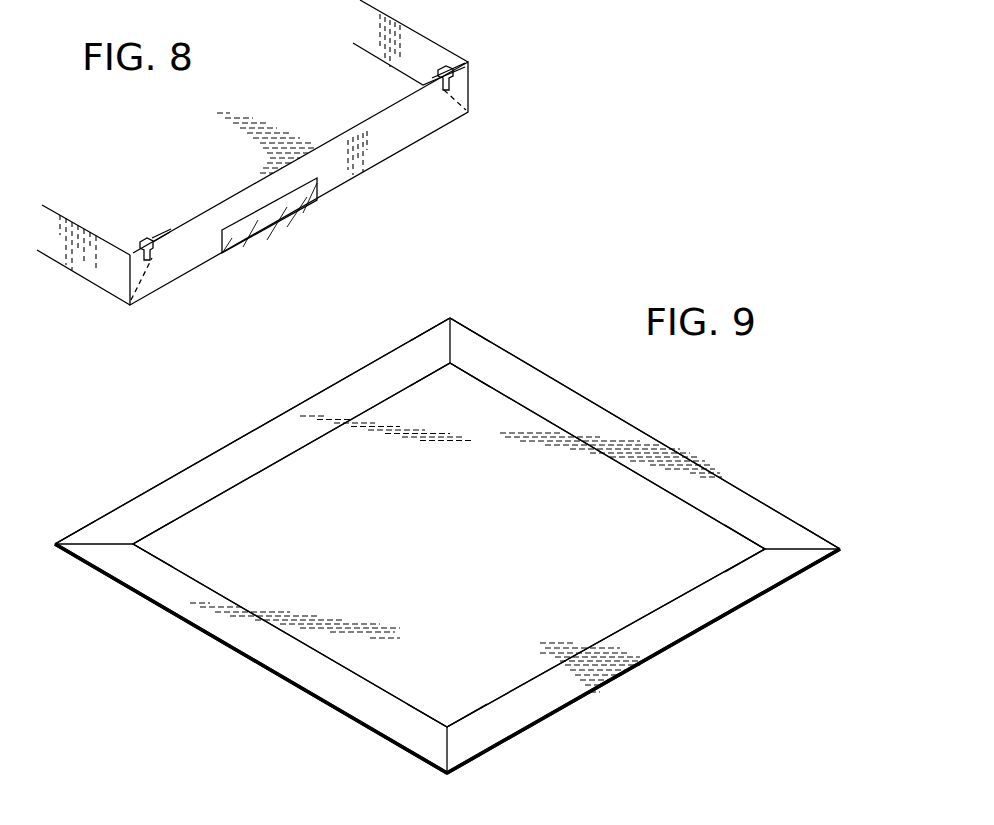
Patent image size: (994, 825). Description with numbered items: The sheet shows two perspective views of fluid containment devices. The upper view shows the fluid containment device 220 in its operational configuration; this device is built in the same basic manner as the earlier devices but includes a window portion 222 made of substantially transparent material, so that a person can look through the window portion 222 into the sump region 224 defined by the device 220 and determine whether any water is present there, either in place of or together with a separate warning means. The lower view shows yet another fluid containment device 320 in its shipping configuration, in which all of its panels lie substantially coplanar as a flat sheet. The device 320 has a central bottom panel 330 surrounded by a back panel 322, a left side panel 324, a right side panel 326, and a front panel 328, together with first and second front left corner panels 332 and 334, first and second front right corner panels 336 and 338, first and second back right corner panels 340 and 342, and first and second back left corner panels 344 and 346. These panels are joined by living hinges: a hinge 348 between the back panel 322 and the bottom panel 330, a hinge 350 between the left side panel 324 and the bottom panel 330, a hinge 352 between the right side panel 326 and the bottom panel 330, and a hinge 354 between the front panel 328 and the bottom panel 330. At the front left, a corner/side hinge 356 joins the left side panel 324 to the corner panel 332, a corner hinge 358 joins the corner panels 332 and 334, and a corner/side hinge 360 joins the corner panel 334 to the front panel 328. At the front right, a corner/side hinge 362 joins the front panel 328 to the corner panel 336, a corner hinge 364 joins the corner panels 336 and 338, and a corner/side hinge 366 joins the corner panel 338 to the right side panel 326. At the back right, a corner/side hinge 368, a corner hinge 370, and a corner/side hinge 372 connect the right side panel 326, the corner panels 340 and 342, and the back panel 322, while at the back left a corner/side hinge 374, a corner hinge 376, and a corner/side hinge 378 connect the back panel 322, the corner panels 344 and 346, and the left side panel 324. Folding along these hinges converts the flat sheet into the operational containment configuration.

In FIG. 8, the fluid containment device 220 is at (474, 44).
In FIG. 8, the window portion 222 is at (277, 210).
In FIG. 8, the sump region 224 is at (367, 110).
In FIG. 9, the fluid containment device 320 is at (260, 693).
In FIG. 9, the back panel 322 is at (288, 422).
In FIG. 9, the left side panel 324 is at (202, 618).
In FIG. 9, the right side panel 326 is at (563, 395).
In FIG. 9, the front panel 328 is at (703, 615).
In FIG. 9, the bottom panel 330 is at (547, 458).
In FIG. 9, the first front left corner panel 332 is at (425, 750).
In FIG. 9, the second front left corner panel 334 is at (455, 757).
In FIG. 9, the first front right corner panel 336 is at (808, 577).
In FIG. 9, the second front right corner panel 338 is at (805, 538).
In FIG. 9, the first back right corner panel 340 is at (472, 343).
In FIG. 9, the second back right corner panel 342 is at (432, 333).
In FIG. 9, the first back left corner panel 344 is at (88, 528).
In FIG. 9, the second back left corner panel 346 is at (88, 553).
In FIG. 9, the hinge 348 is at (262, 472).
In FIG. 9, the hinge 350 is at (277, 628).
In FIG. 9, the hinge 352 is at (640, 477).
In FIG. 9, the hinge 354 is at (642, 618).
In FIG. 9, the front left corner/side hinge 356 is at (430, 732).
In FIG. 9, the front left corner hinge 358 is at (467, 748).
In FIG. 9, the front left corner/side hinge 360 is at (460, 732).
In FIG. 9, the front right corner/side hinge 362 is at (787, 567).
In FIG. 9, the front right corner hinge 364 is at (808, 558).
In FIG. 9, the front right corner/side hinge 366 is at (787, 530).
In FIG. 9, the back right corner/side hinge 368 is at (468, 358).
In FIG. 9, the back right corner hinge 370 is at (470, 330).
In FIG. 9, the back right corner/side hinge 372 is at (432, 350).
In FIG. 9, the back left corner/side hinge 374 is at (107, 535).
In FIG. 9, the back left corner hinge 376 is at (72, 532).
In FIG. 9, the back left corner/side hinge 378 is at (107, 553).